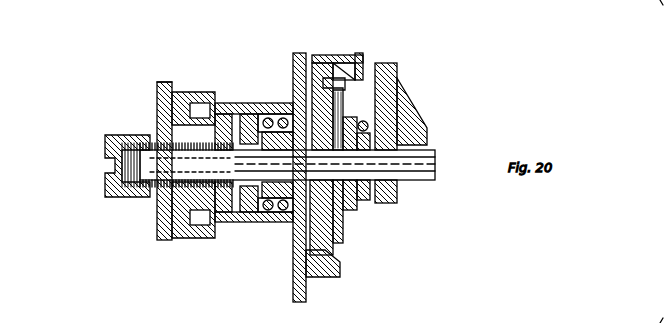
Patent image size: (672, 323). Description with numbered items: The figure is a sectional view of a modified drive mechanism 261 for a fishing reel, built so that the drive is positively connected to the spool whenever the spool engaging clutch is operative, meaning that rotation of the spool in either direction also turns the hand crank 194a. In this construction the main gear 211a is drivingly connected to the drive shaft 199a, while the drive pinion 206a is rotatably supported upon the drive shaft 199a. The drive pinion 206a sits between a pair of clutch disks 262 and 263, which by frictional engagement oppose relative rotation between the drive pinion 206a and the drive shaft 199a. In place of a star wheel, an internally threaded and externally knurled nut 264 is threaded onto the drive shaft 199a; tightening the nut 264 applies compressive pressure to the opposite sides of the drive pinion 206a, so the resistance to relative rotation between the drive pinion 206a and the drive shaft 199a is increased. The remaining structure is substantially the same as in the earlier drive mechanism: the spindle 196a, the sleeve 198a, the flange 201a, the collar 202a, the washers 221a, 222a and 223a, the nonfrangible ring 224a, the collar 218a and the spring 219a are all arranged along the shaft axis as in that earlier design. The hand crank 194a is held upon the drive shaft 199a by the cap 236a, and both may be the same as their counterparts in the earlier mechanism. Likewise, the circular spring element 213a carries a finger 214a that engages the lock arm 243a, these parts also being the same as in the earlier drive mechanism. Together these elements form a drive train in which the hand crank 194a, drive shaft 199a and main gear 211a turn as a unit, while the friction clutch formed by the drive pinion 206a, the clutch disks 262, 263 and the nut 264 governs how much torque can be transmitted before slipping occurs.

The hand crank 194a is at (157, 228).
The spindle 196a is at (397, 165).
The sleeve 198a is at (290, 103).
The drive shaft 199a is at (222, 222).
The flange 201a is at (395, 140).
The collar 202a is at (367, 203).
The drive pinion 206a is at (350, 213).
The main gear 211a is at (328, 277).
The circular spring element 213a is at (297, 262).
The finger 214a is at (362, 76).
The collar 218a is at (283, 210).
The spring 219a is at (263, 118).
The washer 221a is at (252, 185).
The washer 222a is at (233, 103).
The washer 223a is at (248, 103).
The nonfrangible ring 224a is at (178, 101).
The cap 236a is at (105, 138).
The lock arm 243a is at (338, 80).
The drive mechanism 261 is at (118, 199).
The clutch disk 262 is at (370, 126).
The clutch disk 263 is at (316, 60).
The nut 264 is at (160, 90).